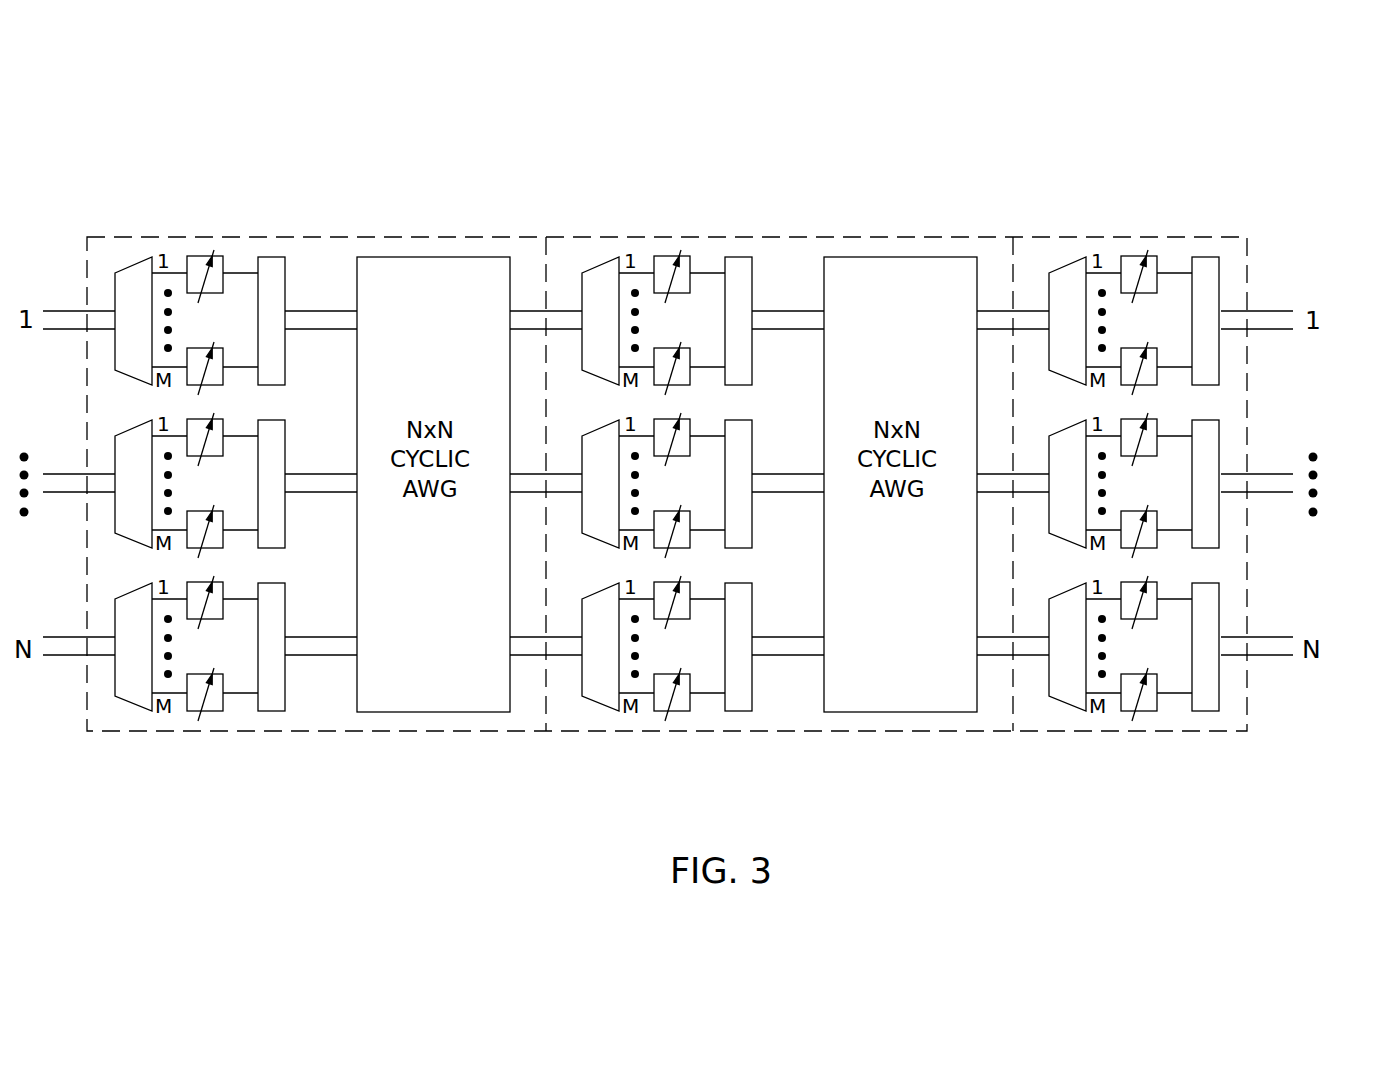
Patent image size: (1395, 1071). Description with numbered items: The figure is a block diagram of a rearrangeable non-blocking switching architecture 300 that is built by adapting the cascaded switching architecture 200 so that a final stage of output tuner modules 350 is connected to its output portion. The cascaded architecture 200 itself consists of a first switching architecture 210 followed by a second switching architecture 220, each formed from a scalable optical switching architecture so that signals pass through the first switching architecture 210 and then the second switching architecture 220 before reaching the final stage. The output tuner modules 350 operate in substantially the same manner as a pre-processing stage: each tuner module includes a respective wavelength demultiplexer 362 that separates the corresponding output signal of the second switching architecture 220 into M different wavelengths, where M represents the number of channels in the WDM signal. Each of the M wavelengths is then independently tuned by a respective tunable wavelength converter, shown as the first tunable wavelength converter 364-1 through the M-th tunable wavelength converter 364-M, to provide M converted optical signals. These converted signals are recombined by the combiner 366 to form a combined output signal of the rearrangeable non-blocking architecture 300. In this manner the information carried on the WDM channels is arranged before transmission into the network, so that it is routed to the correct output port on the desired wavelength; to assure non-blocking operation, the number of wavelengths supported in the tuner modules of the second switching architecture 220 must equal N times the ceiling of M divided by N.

The rearrangeable non-blocking switching architecture 300 is at (576, 121).
The rearrangeable non-blocking switching architecture 200 is at (1012, 753).
The first switching architecture 210 is at (462, 237).
The second switching architecture 220 is at (929, 237).
The output tuner modules 350 is at (1162, 243).
The wavelength demultiplexer 362 is at (1057, 262).
The tunable wavelength converter 364-1 is at (1159, 265).
The tunable wavelength converter 364-M is at (1151, 387).
The combiner 366 is at (1222, 265).